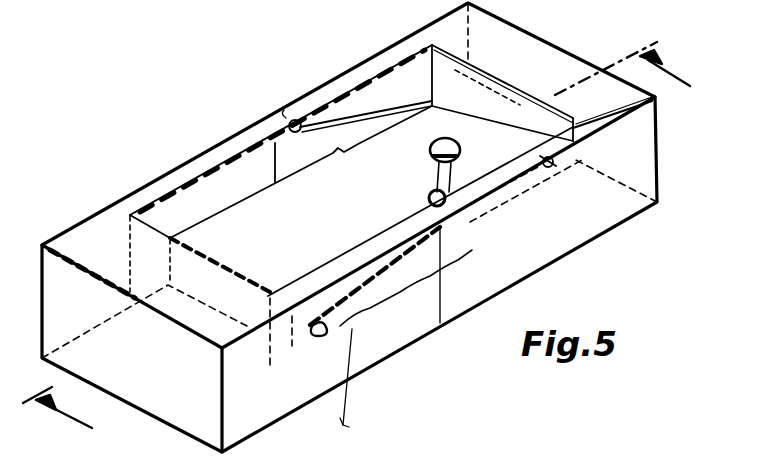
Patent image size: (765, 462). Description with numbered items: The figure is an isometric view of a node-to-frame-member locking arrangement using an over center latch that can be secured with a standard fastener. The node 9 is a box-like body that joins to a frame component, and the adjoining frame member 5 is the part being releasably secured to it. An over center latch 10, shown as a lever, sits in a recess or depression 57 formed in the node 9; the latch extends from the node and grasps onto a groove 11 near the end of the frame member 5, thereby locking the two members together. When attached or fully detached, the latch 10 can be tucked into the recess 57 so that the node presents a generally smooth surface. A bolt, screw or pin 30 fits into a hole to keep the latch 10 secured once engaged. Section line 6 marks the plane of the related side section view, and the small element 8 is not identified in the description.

The frame member 5 is at (334, 333).
The section line 6- 6 is at (364, 249).
The fastener 8 is at (548, 168).
The node 9 is at (532, 243).
The over center latch 10 is at (310, 229).
The groove 11 is at (360, 382).
The bolt, screw or pin 30 is at (428, 152).
The recess 57 is at (179, 212).